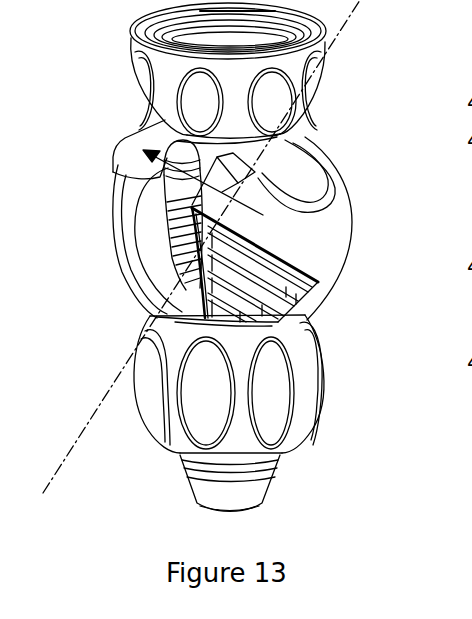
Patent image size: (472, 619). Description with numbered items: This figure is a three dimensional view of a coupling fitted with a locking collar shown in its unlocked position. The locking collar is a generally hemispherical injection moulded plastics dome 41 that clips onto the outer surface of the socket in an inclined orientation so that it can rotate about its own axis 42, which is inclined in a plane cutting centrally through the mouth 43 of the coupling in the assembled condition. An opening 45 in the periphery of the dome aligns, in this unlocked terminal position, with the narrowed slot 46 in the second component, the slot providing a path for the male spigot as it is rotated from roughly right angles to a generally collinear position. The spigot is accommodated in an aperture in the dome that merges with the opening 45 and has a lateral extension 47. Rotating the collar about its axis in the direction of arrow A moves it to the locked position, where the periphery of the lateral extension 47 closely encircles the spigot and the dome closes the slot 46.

The dome 41 is at (153, 131).
The axis 42 is at (97, 410).
The mouth 43 is at (153, 247).
The opening 45 is at (162, 168).
The narrowed slot 46 is at (163, 178).
The lateral extension 47 is at (320, 197).
The arrow A is at (205, 194).